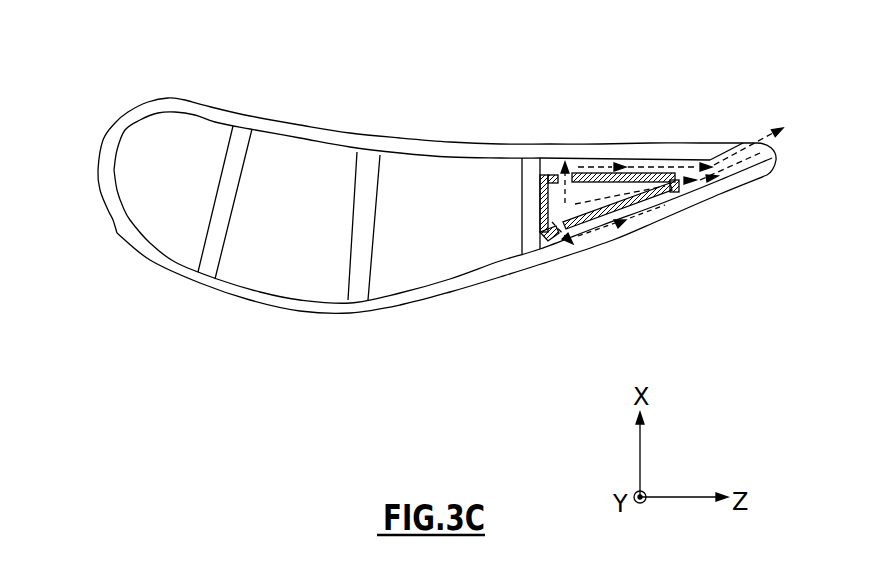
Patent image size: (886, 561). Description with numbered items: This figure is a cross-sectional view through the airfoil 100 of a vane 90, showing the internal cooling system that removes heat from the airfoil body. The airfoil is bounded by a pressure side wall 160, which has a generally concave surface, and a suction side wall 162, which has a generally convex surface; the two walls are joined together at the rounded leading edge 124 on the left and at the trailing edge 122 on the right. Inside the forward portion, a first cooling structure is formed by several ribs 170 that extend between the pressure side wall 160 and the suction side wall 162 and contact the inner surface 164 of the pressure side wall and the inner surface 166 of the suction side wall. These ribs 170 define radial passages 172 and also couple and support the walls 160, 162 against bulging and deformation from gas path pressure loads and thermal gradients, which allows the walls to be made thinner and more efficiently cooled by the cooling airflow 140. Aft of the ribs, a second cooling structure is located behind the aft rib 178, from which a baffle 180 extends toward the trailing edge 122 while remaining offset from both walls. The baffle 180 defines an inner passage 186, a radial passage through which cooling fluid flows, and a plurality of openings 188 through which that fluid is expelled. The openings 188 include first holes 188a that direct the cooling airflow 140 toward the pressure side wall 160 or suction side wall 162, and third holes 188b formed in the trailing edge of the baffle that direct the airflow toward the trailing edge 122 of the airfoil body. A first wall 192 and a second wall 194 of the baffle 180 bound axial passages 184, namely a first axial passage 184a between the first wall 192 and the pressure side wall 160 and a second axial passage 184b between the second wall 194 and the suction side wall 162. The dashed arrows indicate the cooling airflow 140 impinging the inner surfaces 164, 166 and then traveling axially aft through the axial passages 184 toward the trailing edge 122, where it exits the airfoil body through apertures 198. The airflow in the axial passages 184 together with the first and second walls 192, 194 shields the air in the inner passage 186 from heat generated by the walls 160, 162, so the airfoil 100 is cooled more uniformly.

The airfoil 100 is at (434, 203).
The vane 90 is at (79, 86).
The leading edge 124 is at (98, 163).
The trailing edge 122 is at (777, 160).
The cooling airflow 140 is at (733, 158).
The pressure side wall 160 is at (306, 126).
The suction side wall 162 is at (375, 312).
The inner surface of pressure side wall 164 is at (399, 161).
The inner surface of suction side wall 166 is at (440, 272).
The ribs 170 is at (214, 243).
The radial passages 172 is at (317, 236).
The aft rib 178 is at (520, 207).
The baffle 180 is at (538, 197).
The axial passages 184 is at (677, 71).
The first axial passage 184a is at (588, 167).
The second axial passage 184b is at (645, 190).
The inner passage 186 is at (609, 207).
The openings 188 is at (712, 288).
The first holes 188a is at (573, 227).
The third holes 188b is at (673, 193).
The first wall of baffle 192 is at (549, 173).
The second wall of baffle 194 is at (560, 236).
The apertures 198 is at (747, 141).